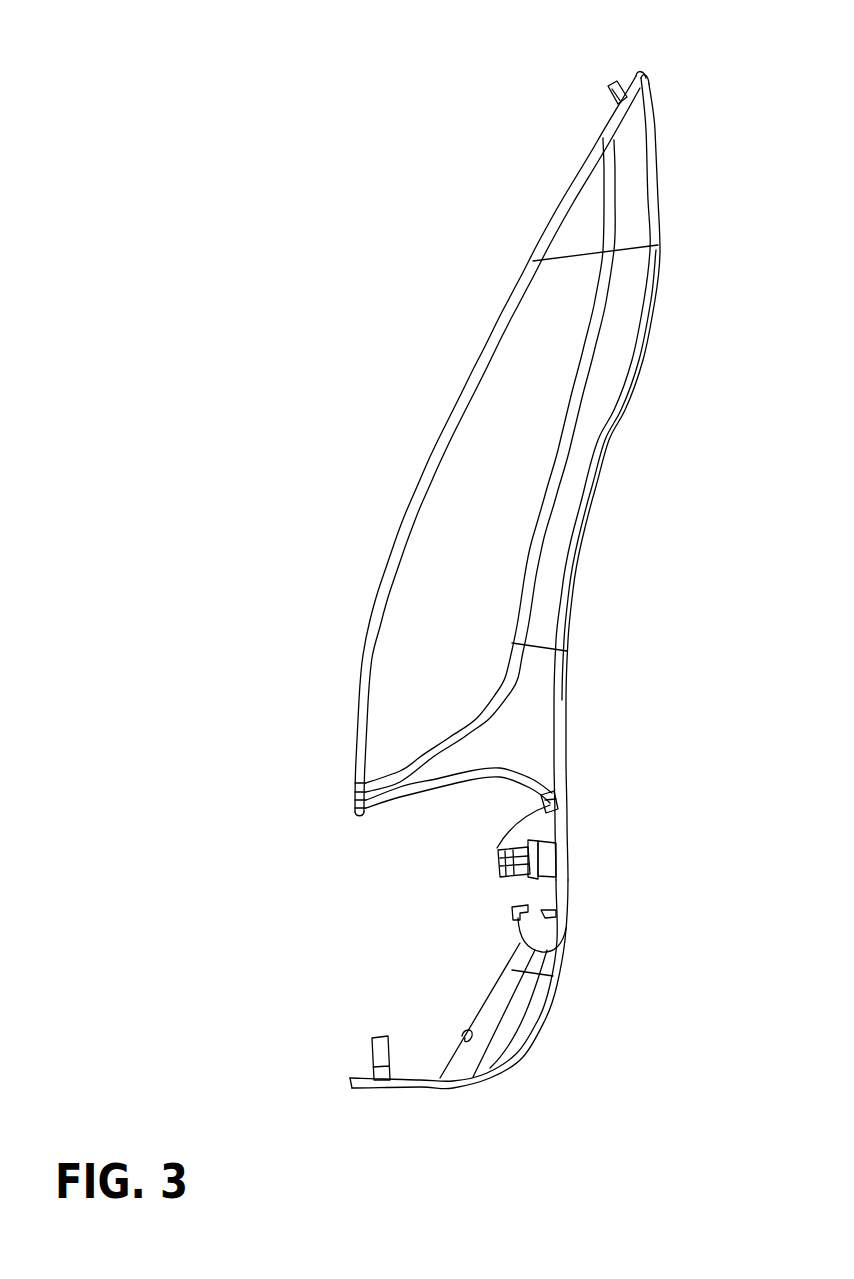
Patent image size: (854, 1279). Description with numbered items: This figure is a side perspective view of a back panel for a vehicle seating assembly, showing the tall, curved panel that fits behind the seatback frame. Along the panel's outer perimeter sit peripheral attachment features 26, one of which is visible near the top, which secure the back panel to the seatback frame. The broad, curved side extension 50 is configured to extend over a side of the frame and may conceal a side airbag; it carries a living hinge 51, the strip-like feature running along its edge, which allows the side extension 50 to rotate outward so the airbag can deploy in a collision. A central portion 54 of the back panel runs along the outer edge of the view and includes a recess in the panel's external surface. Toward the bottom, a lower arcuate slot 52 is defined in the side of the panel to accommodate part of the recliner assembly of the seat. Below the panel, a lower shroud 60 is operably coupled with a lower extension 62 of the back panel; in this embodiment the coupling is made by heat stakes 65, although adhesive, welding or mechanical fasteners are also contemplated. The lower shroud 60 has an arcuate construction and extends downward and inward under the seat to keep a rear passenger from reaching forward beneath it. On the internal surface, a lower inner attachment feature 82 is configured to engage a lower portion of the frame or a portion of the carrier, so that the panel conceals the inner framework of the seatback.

The peripheral attachment feature 26 is at (618, 82).
The side extension 50 is at (408, 644).
The living hinge 51 is at (592, 360).
The lower arcuate slot 52 is at (445, 912).
The central portion 54 is at (584, 535).
The lower shroud 60 is at (543, 1011).
The lower extension 62 is at (560, 883).
The heat stake 65 is at (556, 932).
The lower inner attachment feature 82 is at (550, 805).